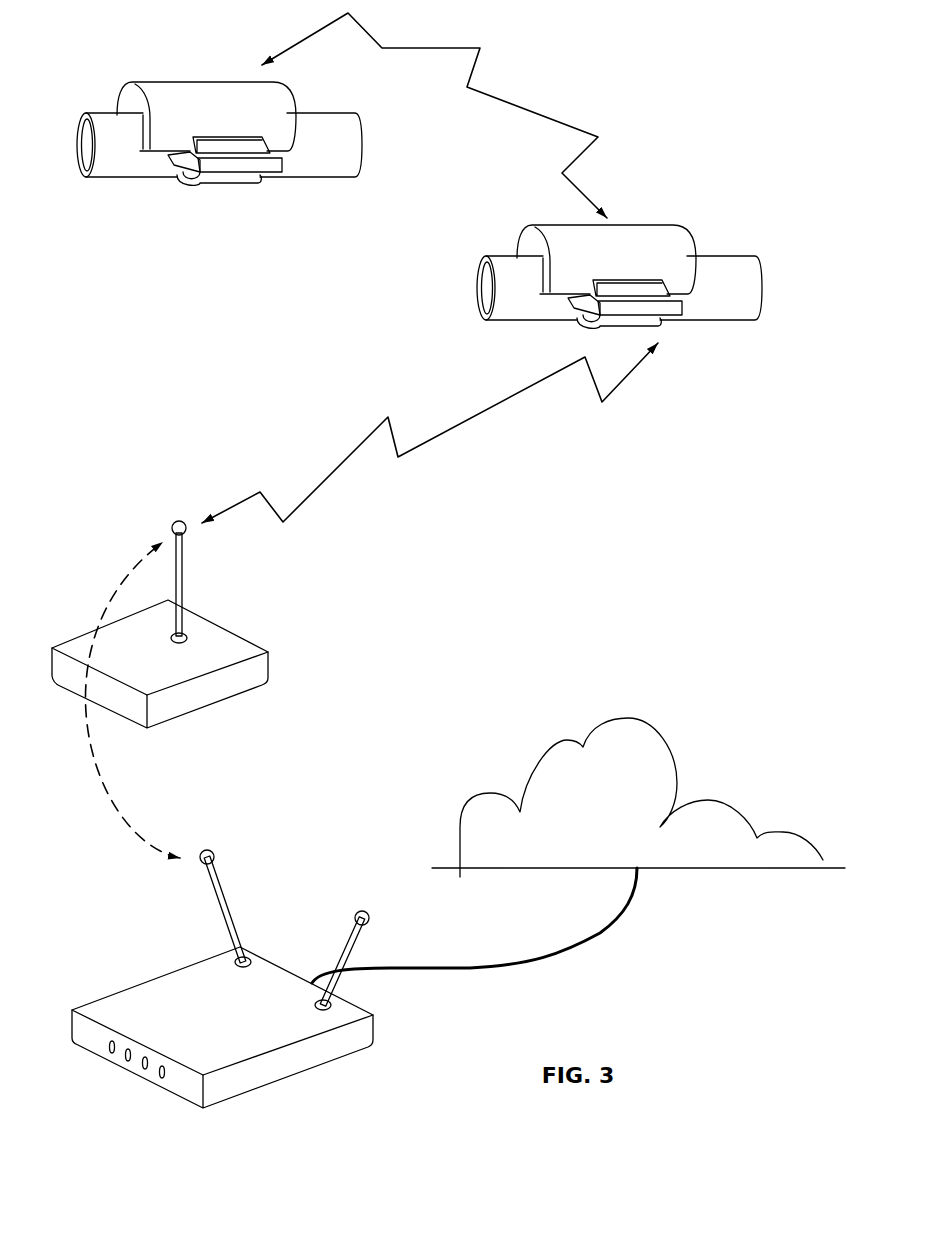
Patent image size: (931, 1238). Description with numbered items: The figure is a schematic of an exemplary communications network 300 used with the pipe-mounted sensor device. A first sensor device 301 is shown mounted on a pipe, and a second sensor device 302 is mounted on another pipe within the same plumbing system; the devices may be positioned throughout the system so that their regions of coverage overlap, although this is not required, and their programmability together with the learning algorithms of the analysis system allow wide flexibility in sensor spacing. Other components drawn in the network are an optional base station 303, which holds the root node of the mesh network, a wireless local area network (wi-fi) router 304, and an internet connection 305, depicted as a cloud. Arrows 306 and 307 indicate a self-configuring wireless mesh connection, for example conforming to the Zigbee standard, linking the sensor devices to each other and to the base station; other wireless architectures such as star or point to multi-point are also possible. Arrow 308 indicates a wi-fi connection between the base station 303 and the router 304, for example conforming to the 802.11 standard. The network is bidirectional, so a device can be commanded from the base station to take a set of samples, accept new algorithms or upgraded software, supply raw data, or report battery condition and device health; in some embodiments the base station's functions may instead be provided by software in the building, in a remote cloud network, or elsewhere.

The communications network 300 is at (662, 127).
The first sensor device 301 is at (242, 193).
The second sensor device 302 is at (735, 332).
The base station 303 is at (112, 618).
The wireless local area network router 304 is at (130, 972).
The internet connection 305 is at (518, 760).
The arrow indicating wireless mesh connection 306 is at (535, 118).
The arrow indicating wireless mesh connection 307 is at (230, 488).
The arrow indicating wi-fi connection 308 is at (168, 832).